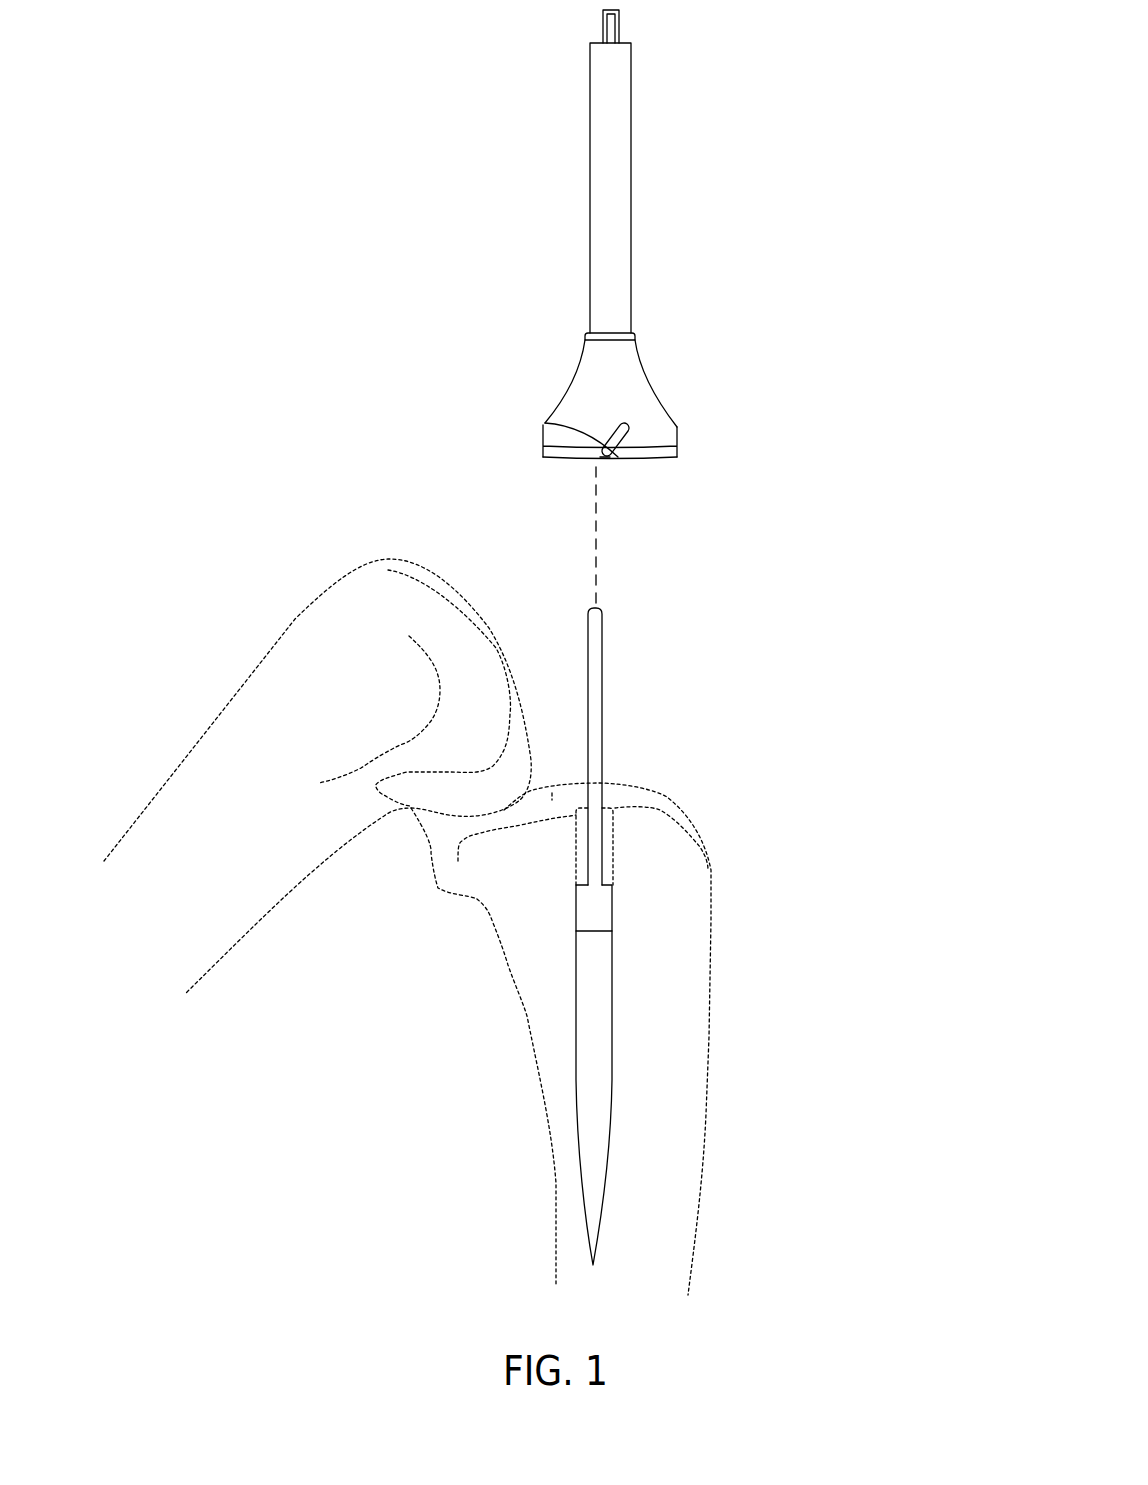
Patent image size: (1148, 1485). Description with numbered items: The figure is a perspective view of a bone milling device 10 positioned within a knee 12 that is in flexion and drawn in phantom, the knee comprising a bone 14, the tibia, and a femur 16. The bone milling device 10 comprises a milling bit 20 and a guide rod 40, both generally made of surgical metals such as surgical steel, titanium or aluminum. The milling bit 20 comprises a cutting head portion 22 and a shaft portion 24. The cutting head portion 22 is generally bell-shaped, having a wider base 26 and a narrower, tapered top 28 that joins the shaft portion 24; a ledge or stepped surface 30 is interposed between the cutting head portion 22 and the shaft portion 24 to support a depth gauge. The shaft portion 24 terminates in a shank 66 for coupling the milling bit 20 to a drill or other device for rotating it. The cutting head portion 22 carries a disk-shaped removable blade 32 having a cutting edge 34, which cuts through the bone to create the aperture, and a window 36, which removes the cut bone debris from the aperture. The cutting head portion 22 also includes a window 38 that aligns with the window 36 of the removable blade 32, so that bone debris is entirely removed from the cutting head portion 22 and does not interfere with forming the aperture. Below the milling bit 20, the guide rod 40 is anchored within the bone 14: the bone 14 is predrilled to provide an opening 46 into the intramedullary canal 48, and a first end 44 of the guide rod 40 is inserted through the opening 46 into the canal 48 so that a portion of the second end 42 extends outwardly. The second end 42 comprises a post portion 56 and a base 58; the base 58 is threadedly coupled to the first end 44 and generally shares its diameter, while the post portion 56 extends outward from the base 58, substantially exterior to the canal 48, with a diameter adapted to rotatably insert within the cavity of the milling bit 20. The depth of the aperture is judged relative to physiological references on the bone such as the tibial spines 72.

The bone milling device 10 is at (838, 377).
The knee 12 is at (460, 518).
The bone 14 is at (693, 813).
The femur 16 is at (293, 617).
The milling bit 20 is at (650, 220).
The cutting head portion 22 is at (647, 383).
The shaft portion 24 is at (630, 118).
The base 26 is at (680, 428).
The tapered top 28 is at (570, 360).
The stepped surface 30 is at (585, 335).
The removable blade 32 is at (667, 460).
The cutting edge 34 is at (605, 457).
The window 36 is at (545, 423).
The window 38 is at (624, 418).
The guide rod 40 is at (640, 915).
The second end 42 is at (604, 633).
The first end 44 is at (606, 999).
The opening 46 is at (627, 777).
The intramedullary canal 48 is at (617, 870).
The post portion 56 is at (602, 708).
The base 58 is at (603, 907).
The shank 66 is at (620, 24).
The tibial spines 72 is at (552, 793).